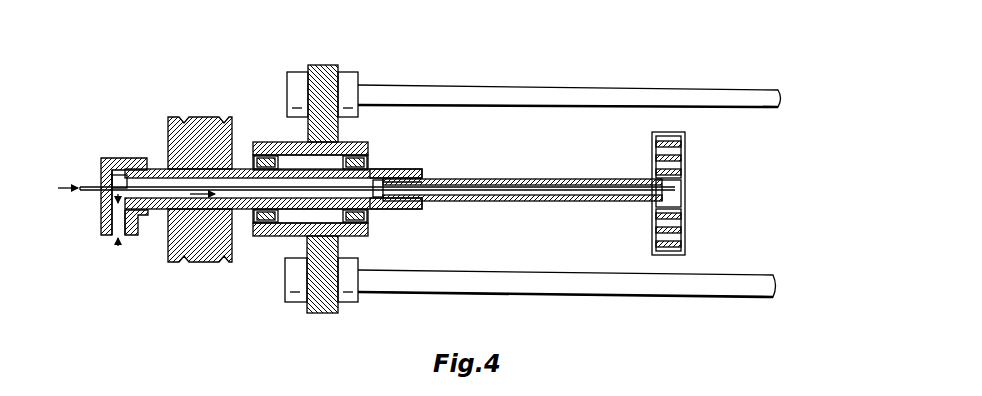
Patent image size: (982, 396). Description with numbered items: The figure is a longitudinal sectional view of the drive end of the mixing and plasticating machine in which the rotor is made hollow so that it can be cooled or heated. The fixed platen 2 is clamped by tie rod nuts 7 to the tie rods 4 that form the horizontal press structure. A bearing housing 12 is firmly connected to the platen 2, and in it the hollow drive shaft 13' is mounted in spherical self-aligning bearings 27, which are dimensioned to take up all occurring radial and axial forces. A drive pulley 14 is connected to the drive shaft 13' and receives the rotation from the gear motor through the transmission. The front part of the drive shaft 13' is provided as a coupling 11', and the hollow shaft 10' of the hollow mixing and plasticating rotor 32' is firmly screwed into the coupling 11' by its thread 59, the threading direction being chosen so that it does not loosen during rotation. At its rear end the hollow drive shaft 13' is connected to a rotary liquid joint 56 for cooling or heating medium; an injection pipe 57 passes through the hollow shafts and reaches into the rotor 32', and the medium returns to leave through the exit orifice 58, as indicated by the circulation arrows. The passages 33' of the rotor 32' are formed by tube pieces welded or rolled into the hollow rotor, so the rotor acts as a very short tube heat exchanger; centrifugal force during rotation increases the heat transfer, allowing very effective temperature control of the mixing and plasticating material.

The fixed platen 2 is at (318, 80).
The tie rods 4 is at (418, 100).
The tie rod nuts 7 is at (290, 92).
The bearing housing 12 is at (287, 142).
The drive pulley 14 is at (192, 130).
The spherical self-aligning bearings 27 is at (368, 228).
The rotary liquid joint 56 is at (115, 158).
The injection pipe 57 is at (90, 191).
The exit orifice 58 is at (122, 217).
The thread 59 is at (423, 173).
The hollow shaft 10' is at (517, 171).
The coupling 11' is at (419, 165).
The hollow drive shaft 13' is at (273, 235).
The hollow mixing and plasticating rotor 32' is at (704, 193).
The passages 33' is at (705, 193).